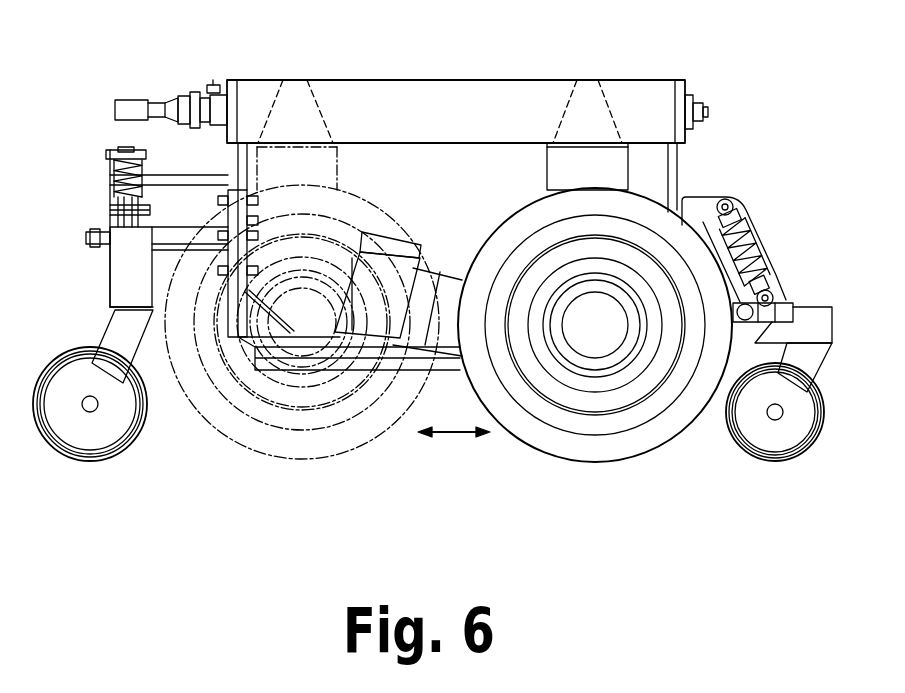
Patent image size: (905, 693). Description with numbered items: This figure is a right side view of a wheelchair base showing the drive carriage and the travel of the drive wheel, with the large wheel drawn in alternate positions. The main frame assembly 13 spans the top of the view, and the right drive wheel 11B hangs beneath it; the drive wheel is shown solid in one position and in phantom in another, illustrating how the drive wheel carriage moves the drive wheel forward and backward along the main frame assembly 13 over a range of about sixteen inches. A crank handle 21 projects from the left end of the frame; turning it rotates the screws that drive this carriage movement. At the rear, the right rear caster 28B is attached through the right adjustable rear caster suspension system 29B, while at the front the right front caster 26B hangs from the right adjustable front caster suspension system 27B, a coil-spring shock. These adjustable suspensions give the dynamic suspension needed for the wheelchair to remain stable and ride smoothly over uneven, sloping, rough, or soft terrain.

The main frame assembly 13 is at (448, 80).
The crank handle 21 is at (128, 100).
The right adjustable rear caster suspension system 29B is at (107, 165).
The right rear caster 28B is at (90, 462).
The right drive wheel 11B is at (607, 460).
The right adjustable front caster suspension system 27B is at (775, 246).
The right front caster 26B is at (785, 460).